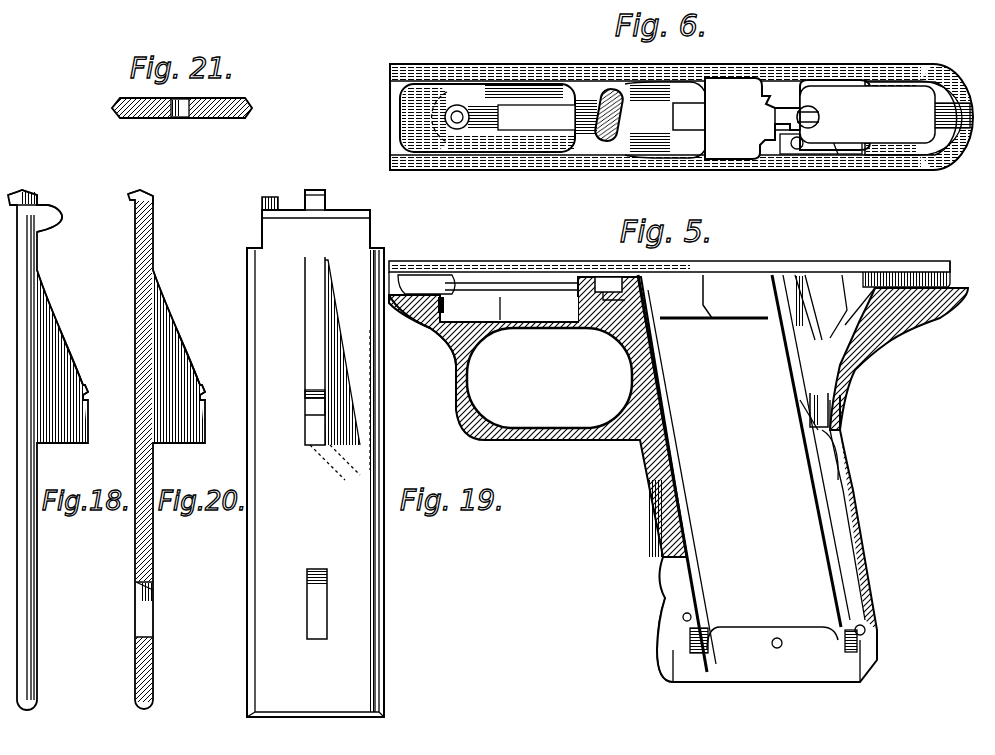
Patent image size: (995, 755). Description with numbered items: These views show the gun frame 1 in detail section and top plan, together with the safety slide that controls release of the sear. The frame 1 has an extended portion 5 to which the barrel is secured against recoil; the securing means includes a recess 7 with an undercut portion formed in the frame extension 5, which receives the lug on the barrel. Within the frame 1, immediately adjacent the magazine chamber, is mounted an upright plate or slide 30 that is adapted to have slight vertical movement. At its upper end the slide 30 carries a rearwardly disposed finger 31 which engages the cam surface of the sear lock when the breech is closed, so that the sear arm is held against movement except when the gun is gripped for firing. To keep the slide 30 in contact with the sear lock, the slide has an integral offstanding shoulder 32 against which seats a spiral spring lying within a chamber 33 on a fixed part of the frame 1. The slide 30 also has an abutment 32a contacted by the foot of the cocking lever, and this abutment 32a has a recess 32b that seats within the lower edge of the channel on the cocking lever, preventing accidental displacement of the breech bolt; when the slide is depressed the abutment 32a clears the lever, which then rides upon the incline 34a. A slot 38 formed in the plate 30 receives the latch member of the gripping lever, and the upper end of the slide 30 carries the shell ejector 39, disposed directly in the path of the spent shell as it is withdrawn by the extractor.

In FIG. 6, the frame 1 is at (800, 163).
In FIG. 5, the frame 1 is at (640, 440).
In FIG. 6, the extended portion of the frame 5 is at (392, 75).
In FIG. 5, the extended portion of the frame 5 is at (458, 343).
In FIG. 6, the recess 7 is at (612, 135).
In FIG. 5, the recess 7 is at (606, 280).
In FIG. 18, the plate or slide 30 is at (35, 558).
In FIG. 20, the plate or slide 30 is at (152, 542).
In FIG. 19, the plate or slide 30 is at (265, 566).
In FIG. 21, the plate or slide 30 is at (138, 119).
In FIG. 18, the rearwardly disposed finger 31 is at (58, 210).
In FIG. 19, the rearwardly disposed finger 31 is at (262, 204).
In FIG. 18, the offstanding shoulder 32 is at (66, 372).
In FIG. 20, the offstanding shoulder 32 is at (182, 372).
In FIG. 19, the offstanding shoulder 32 is at (305, 353).
In FIG. 18, the abutment 32a is at (88, 393).
In FIG. 20, the abutment 32a is at (205, 393).
In FIG. 19, the abutment 32a is at (305, 394).
In FIG. 18, the recess 32b is at (88, 406).
In FIG. 20, the recess 32b is at (205, 406).
In FIG. 19, the recess 32b is at (310, 405).
In FIG. 6, the chamber 33 is at (800, 120).
In FIG. 5, the chamber 33 is at (830, 410).
In FIG. 5, the incline 34a is at (860, 322).
In FIG. 18, the incline 34a is at (52, 340).
In FIG. 20, the incline 34a is at (168, 340).
In FIG. 19, the incline 34a is at (318, 310).
In FIG. 20, the slot 38 is at (153, 598).
In FIG. 19, the slot 38 is at (315, 605).
In FIG. 21, the slot 38 is at (181, 119).
In FIG. 18, the shell ejector 39 is at (20, 193).
In FIG. 20, the shell ejector 39 is at (137, 194).
In FIG. 19, the shell ejector 39 is at (315, 192).